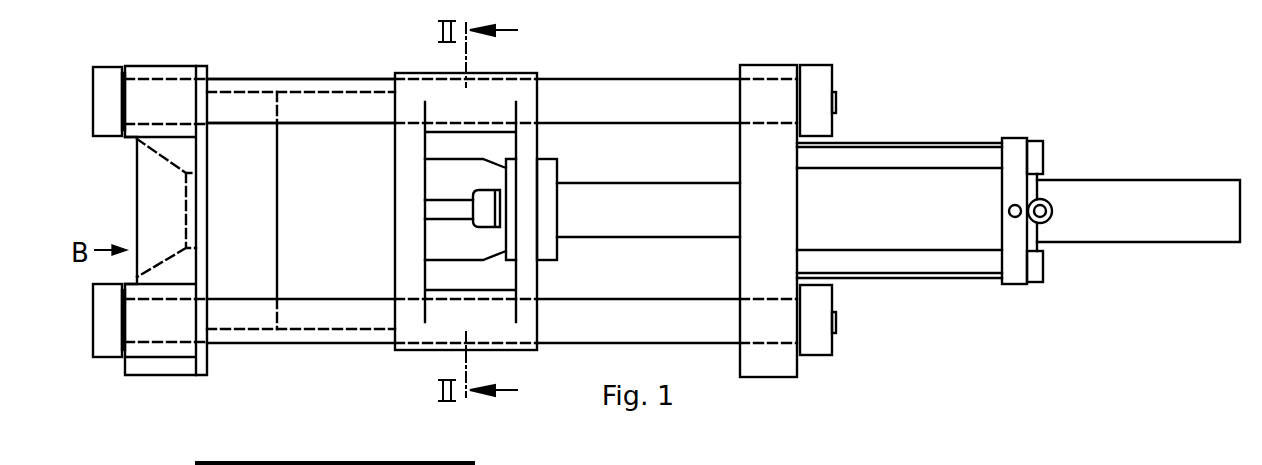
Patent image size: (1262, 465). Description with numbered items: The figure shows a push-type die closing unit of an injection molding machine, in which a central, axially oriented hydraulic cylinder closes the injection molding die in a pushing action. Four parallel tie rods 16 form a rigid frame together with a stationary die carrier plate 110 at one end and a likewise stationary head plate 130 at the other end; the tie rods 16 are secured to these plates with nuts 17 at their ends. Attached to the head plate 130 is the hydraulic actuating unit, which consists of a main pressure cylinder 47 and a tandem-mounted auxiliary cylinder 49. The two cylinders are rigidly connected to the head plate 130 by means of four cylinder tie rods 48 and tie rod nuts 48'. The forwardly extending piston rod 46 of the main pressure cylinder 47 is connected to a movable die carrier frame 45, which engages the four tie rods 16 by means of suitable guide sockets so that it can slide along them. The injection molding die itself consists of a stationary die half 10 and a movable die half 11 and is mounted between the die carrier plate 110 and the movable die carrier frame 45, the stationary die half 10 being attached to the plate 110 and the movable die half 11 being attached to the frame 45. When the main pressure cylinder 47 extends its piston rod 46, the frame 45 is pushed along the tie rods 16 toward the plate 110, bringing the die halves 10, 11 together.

The stationary die half 10 is at (244, 273).
The movable die half 11 is at (308, 273).
The tie rod 16 is at (337, 107).
The nut 17 is at (108, 80).
The movable die carrier frame 45 is at (418, 333).
The piston rod 46 is at (623, 218).
The main pressure cylinder 47 is at (928, 230).
The cylinder tie rod 48 is at (899, 178).
The tie rod nut 48' is at (1066, 201).
The auxiliary cylinder 49 is at (1159, 225).
The stationary die carrier plate 110 is at (153, 173).
The stationary head plate 130 is at (758, 338).